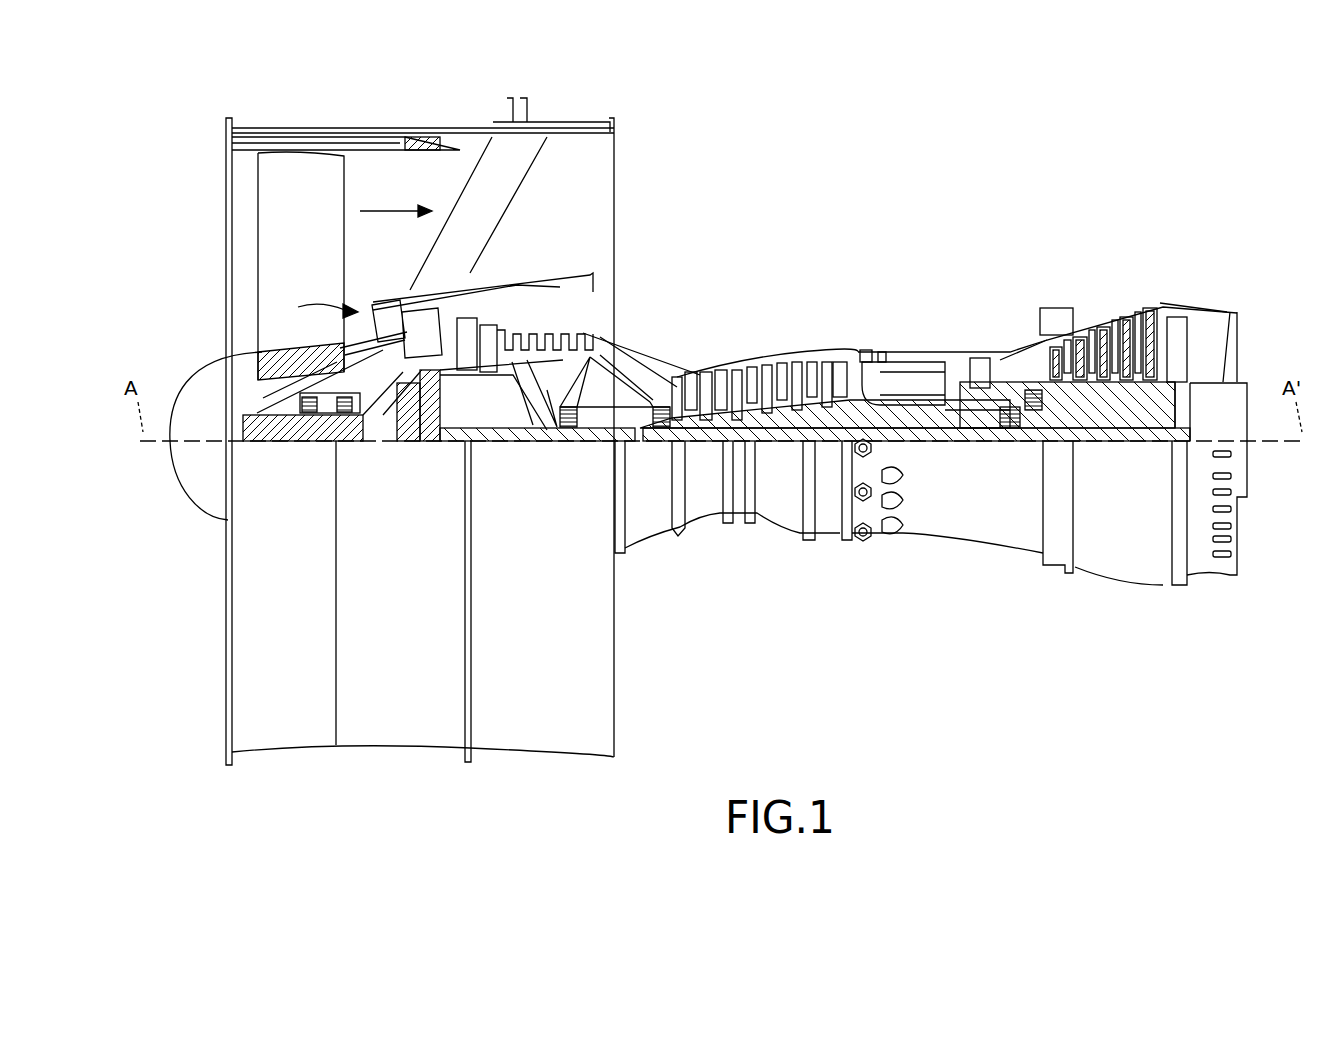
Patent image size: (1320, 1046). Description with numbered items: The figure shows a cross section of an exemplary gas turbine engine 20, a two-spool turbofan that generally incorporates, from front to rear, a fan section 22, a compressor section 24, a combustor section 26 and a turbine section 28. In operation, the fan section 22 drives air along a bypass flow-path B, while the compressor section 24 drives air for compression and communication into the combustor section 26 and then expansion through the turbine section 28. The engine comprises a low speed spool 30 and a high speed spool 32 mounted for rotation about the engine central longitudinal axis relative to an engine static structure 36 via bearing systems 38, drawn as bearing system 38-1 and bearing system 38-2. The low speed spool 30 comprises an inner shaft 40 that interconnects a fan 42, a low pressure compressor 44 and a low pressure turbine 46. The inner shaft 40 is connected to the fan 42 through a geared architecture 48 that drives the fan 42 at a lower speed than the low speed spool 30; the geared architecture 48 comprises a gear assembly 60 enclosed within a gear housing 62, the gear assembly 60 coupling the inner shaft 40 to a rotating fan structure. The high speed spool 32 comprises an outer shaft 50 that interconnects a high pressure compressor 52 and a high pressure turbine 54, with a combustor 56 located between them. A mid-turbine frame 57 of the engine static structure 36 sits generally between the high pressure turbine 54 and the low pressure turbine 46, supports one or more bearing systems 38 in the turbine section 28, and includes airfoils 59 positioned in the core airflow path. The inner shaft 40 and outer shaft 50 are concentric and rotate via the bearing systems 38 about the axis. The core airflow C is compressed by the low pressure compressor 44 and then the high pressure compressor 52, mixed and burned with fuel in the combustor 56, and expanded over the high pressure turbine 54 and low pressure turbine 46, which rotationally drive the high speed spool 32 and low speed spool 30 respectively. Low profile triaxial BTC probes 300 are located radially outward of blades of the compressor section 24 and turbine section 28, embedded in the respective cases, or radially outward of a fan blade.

The gas turbine engine 20 is at (962, 160).
The fan section 22 is at (465, 107).
The compressor section 24 is at (473, 242).
The combustor section 26 is at (956, 242).
The turbine section 28 is at (1180, 242).
The low speed spool 30 is at (784, 475).
The high speed spool 32 is at (827, 410).
The engine static structure 36 is at (198, 760).
The bearing system 38 is at (1020, 441).
The bearing system 38-1 is at (312, 415).
The bearing system 38-2 is at (565, 430).
The inner shaft 40 is at (637, 441).
The fan 42 is at (301, 266).
The low pressure compressor section 44 is at (557, 325).
The low pressure turbine section 46 is at (1105, 325).
The geared architecture 48 is at (432, 464).
The outer shaft 50 is at (900, 427).
The high pressure compressor 52 is at (782, 375).
The high pressure turbine section 54 is at (977, 358).
The combustor 56 is at (900, 380).
The mid-turbine frame 57 is at (1020, 345).
The airfoils 59 is at (1045, 335).
The gear assembly 60 is at (437, 418).
The gear housing 62 is at (430, 382).
The low profile triaxial BTC probe 300 is at (487, 322).
The bypass flow-path B is at (392, 215).
The core airflow C is at (317, 306).